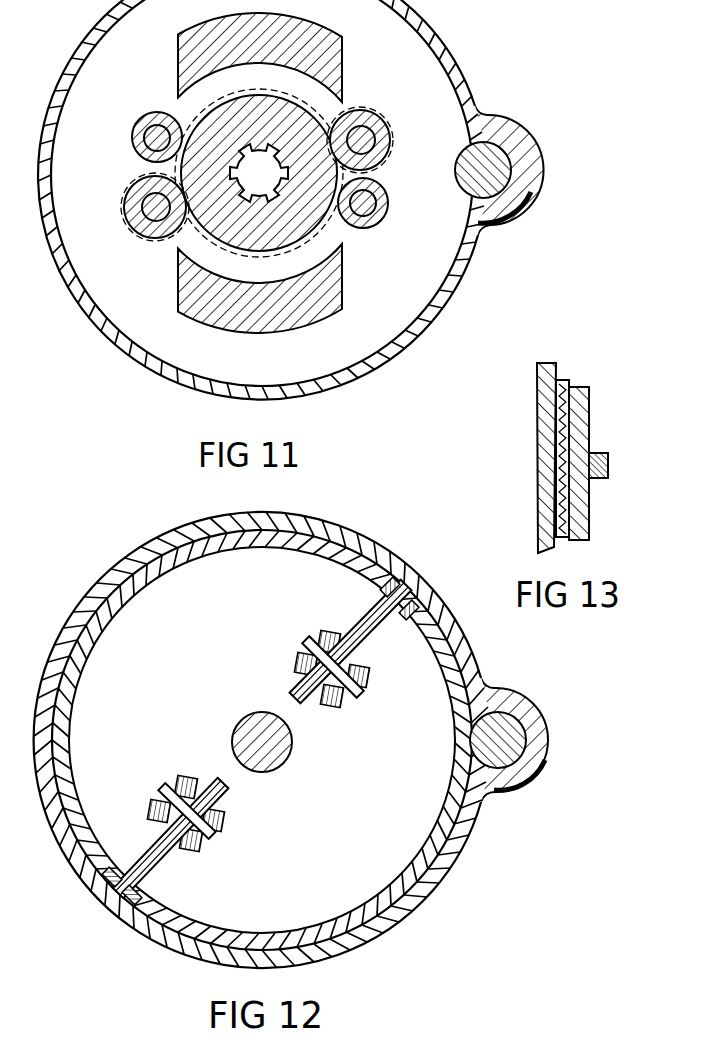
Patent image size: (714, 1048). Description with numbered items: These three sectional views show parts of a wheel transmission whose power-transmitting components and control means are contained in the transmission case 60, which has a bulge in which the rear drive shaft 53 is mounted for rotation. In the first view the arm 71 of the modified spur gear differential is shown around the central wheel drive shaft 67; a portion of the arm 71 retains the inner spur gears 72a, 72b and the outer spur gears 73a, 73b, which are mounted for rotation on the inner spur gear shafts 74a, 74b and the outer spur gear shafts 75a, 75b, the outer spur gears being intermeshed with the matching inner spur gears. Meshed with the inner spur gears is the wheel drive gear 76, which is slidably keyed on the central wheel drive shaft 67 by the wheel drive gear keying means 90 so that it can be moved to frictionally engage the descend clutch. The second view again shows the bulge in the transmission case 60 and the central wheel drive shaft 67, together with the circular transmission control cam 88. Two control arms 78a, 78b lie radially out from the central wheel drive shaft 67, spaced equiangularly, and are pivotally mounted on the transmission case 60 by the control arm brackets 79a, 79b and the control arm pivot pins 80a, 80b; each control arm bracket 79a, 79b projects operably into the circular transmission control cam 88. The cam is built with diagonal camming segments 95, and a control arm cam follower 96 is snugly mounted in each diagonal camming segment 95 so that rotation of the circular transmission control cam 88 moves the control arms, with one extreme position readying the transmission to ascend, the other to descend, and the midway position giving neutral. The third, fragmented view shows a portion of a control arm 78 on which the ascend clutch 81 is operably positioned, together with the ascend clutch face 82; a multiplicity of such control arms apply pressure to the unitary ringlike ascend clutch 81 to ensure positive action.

In FIG. 11, the rear drive shaft 53 is at (493, 182).
In FIG. 12, the rear drive shaft 53 is at (507, 751).
In FIG. 11, the transmission case 60 is at (443, 42).
In FIG. 12, the transmission case 60 is at (384, 560).
In FIG. 11, the central wheel drive shaft 67 is at (259, 173).
In FIG. 12, the central wheel drive shaft 67 is at (287, 759).
In FIG. 11, the arm 71 is at (300, 25).
In FIG. 11, the inner spur gear 72a is at (378, 118).
In FIG. 11, the inner spur gear 72b is at (148, 238).
In FIG. 11, the outer spur gear 73a is at (389, 203).
In FIG. 11, the outer spur gear 73b is at (160, 112).
In FIG. 11, the inner spur gear shaft 74a is at (375, 141).
In FIG. 11, the inner spur gear shaft 74b is at (142, 208).
In FIG. 11, the outer spur gear shaft 75a is at (368, 218).
In FIG. 11, the outer spur gear shaft 75b is at (145, 142).
In FIG. 11, the wheel drive gear 76 is at (280, 254).
In FIG. 13, the control arm 78 is at (608, 466).
In FIG. 12, the control arm 78a is at (362, 672).
In FIG. 12, the control arm 78b is at (153, 840).
In FIG. 12, the control arm bracket 79a is at (306, 655).
In FIG. 12, the control arm bracket 79b is at (176, 780).
In FIG. 12, the control arm pivot pin 80a is at (345, 692).
In FIG. 12, the control arm pivot pin 80b is at (208, 832).
In FIG. 13, the ascend clutch 81 is at (566, 382).
In FIG. 13, the ascend clutch face 82 is at (537, 462).
In FIG. 12, the circular transmission control cam 88 is at (407, 870).
In FIG. 11, the wheel drive gear keying means 90 is at (261, 147).
In FIG. 12, the diagonal camming segment 95 is at (372, 592).
In FIG. 12, the control arm cam follower 96 is at (406, 620).